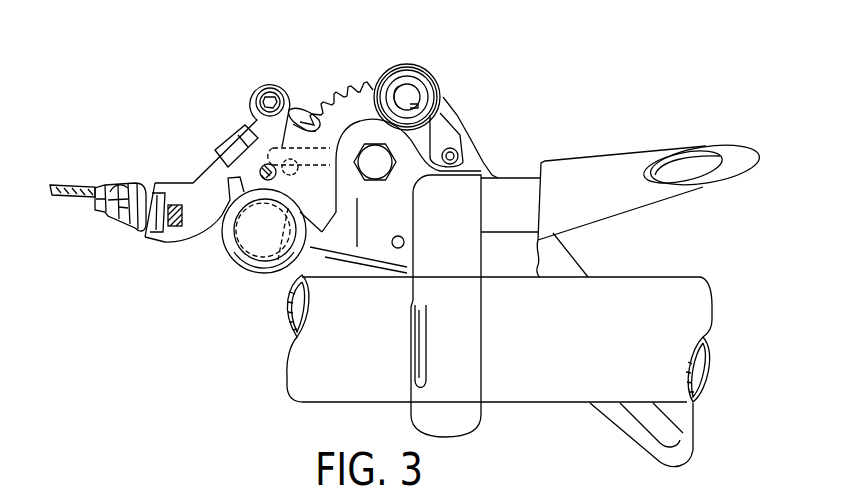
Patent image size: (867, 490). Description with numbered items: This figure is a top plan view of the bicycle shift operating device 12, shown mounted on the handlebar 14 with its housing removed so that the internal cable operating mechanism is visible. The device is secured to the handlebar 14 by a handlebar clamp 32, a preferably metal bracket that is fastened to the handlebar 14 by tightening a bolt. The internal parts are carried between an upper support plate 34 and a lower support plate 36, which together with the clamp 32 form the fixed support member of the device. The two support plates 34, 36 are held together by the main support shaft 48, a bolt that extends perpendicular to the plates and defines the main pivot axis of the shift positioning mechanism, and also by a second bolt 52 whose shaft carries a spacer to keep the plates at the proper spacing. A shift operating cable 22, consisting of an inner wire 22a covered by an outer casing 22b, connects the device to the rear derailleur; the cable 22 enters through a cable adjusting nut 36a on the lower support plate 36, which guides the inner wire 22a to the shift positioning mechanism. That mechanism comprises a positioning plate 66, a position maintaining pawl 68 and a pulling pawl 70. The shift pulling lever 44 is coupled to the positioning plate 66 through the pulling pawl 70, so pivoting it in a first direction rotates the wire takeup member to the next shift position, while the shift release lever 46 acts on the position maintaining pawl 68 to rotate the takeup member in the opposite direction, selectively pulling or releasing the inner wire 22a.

The bicycle shift operating device 12 is at (191, 88).
The handlebar 14 is at (310, 405).
The shift operating cable 22 is at (147, 288).
The inner wire 22a is at (57, 198).
The outer casing 22b is at (92, 209).
The handlebar clamp 32 is at (487, 432).
The upper support plate 34 is at (171, 248).
The lower support plate 36 is at (206, 166).
The cable adjusting nut 36a is at (122, 186).
The shift pulling lever 44 is at (622, 436).
The shift release lever 46 is at (660, 156).
The main support shaft 48 is at (368, 158).
The bolt 52 is at (262, 88).
The positioning plate 66 is at (318, 90).
The position maintaining pawl 68 is at (240, 128).
The pulling pawl 70 is at (453, 136).